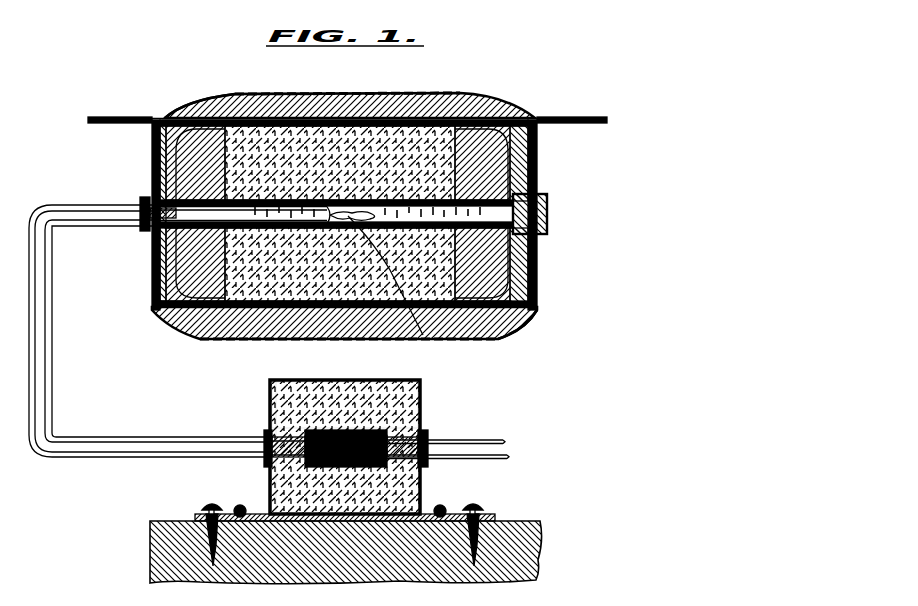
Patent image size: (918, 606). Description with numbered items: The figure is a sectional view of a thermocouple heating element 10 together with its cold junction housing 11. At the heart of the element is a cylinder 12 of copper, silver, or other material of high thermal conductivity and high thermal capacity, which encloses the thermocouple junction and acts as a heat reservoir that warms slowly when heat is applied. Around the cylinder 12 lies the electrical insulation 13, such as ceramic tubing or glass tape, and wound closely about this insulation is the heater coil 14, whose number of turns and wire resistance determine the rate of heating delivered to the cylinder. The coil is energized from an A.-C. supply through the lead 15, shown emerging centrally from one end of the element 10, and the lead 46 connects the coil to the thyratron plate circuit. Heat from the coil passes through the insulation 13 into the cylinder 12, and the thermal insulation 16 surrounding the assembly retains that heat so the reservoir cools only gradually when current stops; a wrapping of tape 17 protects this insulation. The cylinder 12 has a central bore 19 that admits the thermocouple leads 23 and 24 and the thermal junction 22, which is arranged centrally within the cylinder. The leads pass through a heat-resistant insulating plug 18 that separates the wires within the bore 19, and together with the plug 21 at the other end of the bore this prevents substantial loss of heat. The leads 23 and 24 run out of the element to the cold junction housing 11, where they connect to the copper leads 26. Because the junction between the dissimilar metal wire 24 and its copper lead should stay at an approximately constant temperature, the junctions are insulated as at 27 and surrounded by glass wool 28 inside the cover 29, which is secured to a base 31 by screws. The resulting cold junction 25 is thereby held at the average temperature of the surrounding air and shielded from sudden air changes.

The thermocouple heating element 10 is at (347, 210).
The cold junction housing 11 is at (368, 432).
The cylinder 12 is at (531, 163).
The insulation 13 is at (516, 326).
The heater coil 14 is at (345, 132).
The lead 15 is at (107, 120).
The thermal insulation 16 is at (209, 331).
The tape 17 is at (206, 100).
The insulating plug 18 is at (144, 198).
The central bore 19 is at (202, 330).
The plug 21 is at (548, 210).
The thermal junction 22 is at (423, 336).
The thermocouple lead 23 is at (213, 437).
The thermocouple lead 24 is at (128, 457).
The cold junction 25 is at (272, 461).
The copper leads 26 is at (481, 453).
The insulation of lead junctions 27 is at (365, 436).
The glass wool 28 is at (330, 388).
The cover 29 is at (269, 393).
The base 31 is at (540, 521).
The lead 46 is at (576, 118).